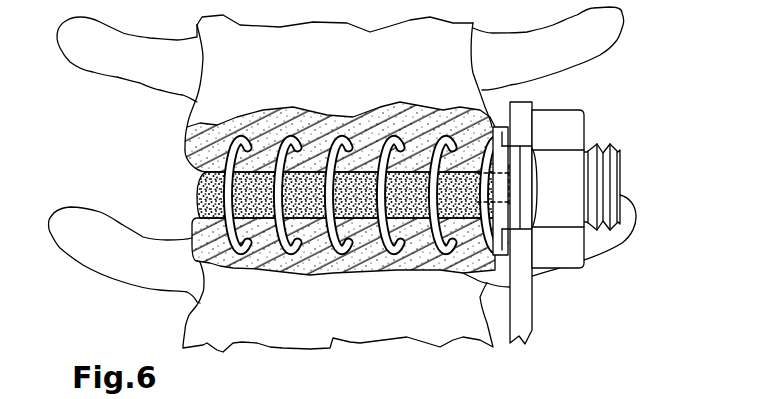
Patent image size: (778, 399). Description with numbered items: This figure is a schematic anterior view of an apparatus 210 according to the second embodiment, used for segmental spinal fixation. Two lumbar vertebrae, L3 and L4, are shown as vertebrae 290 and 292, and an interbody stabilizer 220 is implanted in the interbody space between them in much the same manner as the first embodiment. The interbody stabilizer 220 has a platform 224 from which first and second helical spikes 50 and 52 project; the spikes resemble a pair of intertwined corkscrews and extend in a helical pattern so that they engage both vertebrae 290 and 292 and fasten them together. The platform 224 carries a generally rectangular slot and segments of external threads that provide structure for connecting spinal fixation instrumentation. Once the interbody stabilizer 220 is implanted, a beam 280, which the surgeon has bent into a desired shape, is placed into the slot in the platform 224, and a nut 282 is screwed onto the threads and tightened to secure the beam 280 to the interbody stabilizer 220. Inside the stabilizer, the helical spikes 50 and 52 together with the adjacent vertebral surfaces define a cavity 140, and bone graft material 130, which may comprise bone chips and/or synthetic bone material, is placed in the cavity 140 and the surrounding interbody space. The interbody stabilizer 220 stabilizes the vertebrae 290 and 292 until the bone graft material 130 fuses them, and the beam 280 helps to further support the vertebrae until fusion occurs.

The apparatus 210 is at (612, 197).
The interbody stabilizer 220 is at (628, 153).
The platform 224 is at (492, 127).
The beam 280 is at (528, 113).
The nut 282 is at (570, 124).
The vertebra L3 290 is at (176, 117).
The vertebra L4 292 is at (172, 322).
The bone graft material 130 is at (281, 170).
The cavity 140 is at (328, 168).
The first helical spike 50 is at (378, 114).
The second helical spike 52 is at (392, 250).